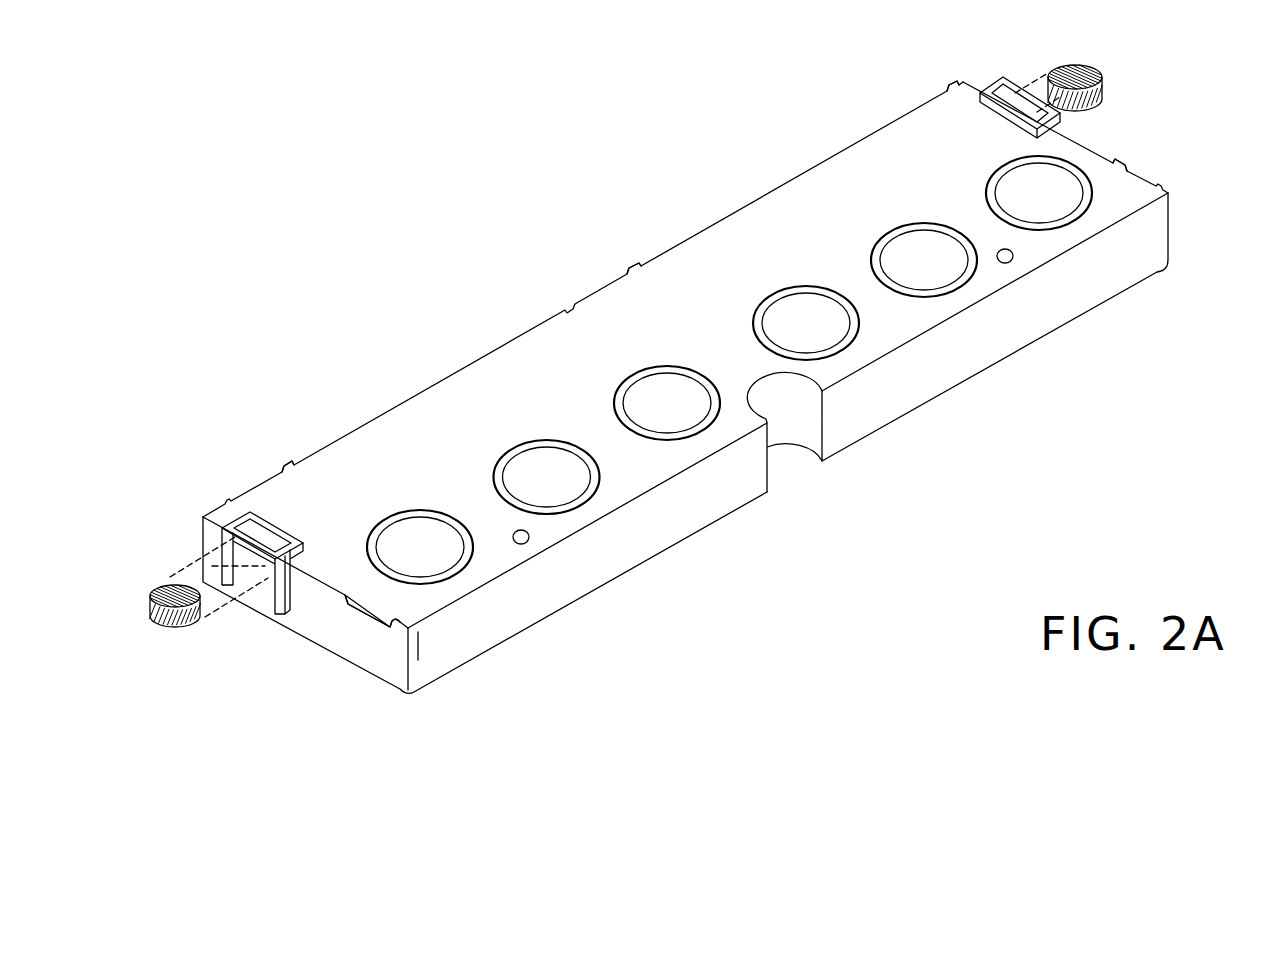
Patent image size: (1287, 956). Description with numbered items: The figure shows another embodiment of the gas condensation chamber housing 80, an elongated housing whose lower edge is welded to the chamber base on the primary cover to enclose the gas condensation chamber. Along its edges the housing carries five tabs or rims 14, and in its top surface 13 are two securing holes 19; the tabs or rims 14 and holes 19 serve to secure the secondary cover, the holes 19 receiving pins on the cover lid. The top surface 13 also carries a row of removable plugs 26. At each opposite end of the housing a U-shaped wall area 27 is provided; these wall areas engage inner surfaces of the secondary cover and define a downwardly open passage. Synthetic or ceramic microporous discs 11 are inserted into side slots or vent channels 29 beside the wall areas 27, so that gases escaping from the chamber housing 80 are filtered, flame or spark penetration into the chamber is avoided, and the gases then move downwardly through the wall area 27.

The gas condensation chamber housing 80 is at (682, 367).
The top surface 13 is at (834, 212).
The tabs or rims 14 is at (907, 113).
The removable plugs 26 is at (1067, 188).
The securing holes 19 is at (528, 541).
The U-shaped wall area 27 is at (276, 604).
The side slots or vent channels 29 is at (210, 566).
The microporous discs 11 is at (181, 630).